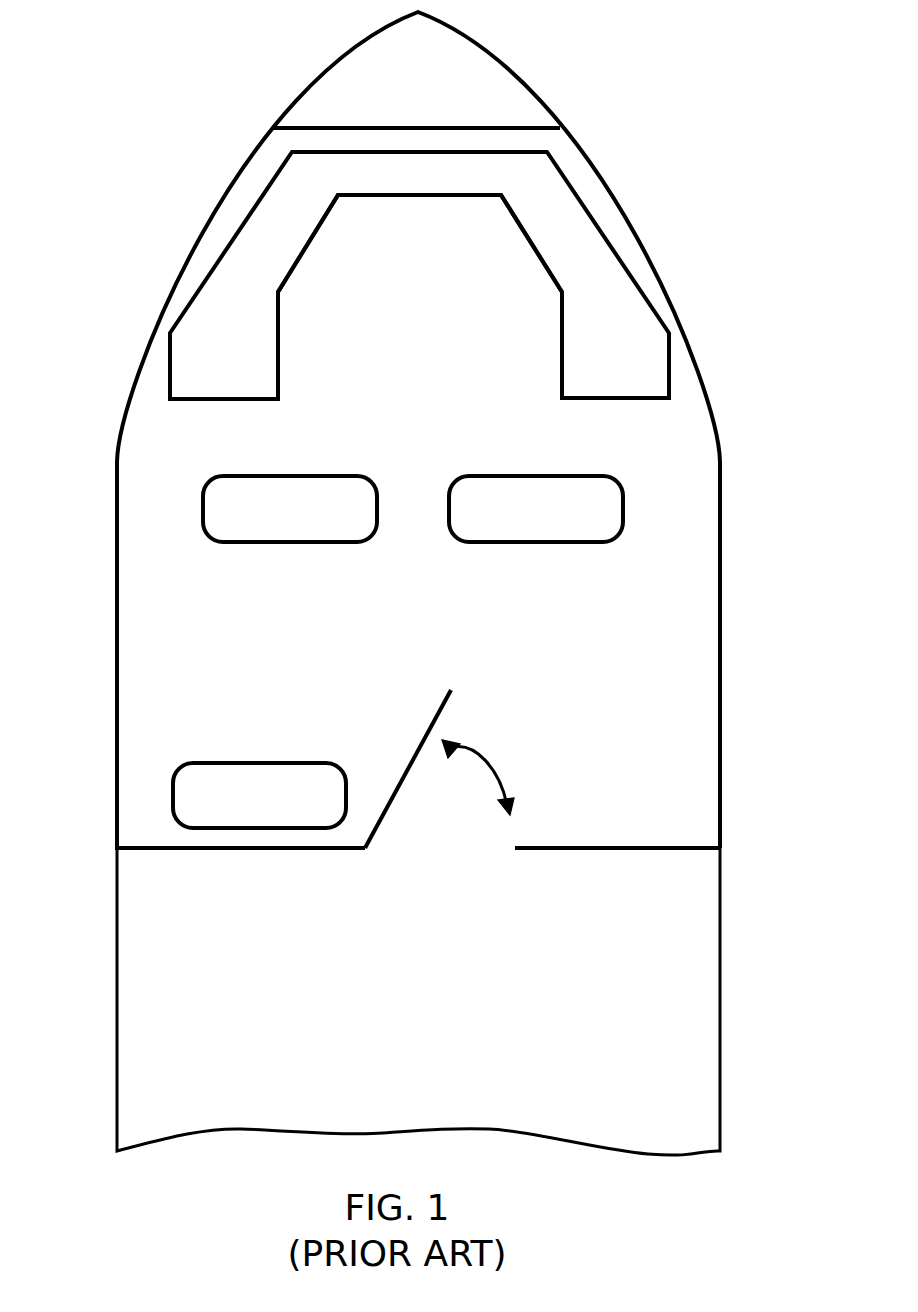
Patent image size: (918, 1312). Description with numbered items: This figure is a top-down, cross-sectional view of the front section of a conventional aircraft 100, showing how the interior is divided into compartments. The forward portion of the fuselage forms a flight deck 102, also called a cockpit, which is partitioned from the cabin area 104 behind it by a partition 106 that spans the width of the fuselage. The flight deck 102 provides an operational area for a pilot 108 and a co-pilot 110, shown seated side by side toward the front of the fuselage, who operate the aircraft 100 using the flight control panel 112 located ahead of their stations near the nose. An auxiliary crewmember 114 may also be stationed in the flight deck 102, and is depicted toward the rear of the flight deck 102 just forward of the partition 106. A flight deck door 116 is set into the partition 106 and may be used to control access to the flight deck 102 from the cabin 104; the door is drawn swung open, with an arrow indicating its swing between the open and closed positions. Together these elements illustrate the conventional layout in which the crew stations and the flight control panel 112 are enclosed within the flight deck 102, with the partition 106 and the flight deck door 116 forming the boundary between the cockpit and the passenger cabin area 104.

The aircraft 100 is at (118, 205).
The flight deck 102 is at (687, 572).
The cabin area 104 is at (688, 1006).
The partition 106 is at (137, 847).
The pilot 108 is at (290, 509).
The co-pilot 110 is at (536, 509).
The flight control panel 112 is at (575, 255).
The auxiliary crewmember 114 is at (259, 795).
The flight deck door 116 is at (418, 745).